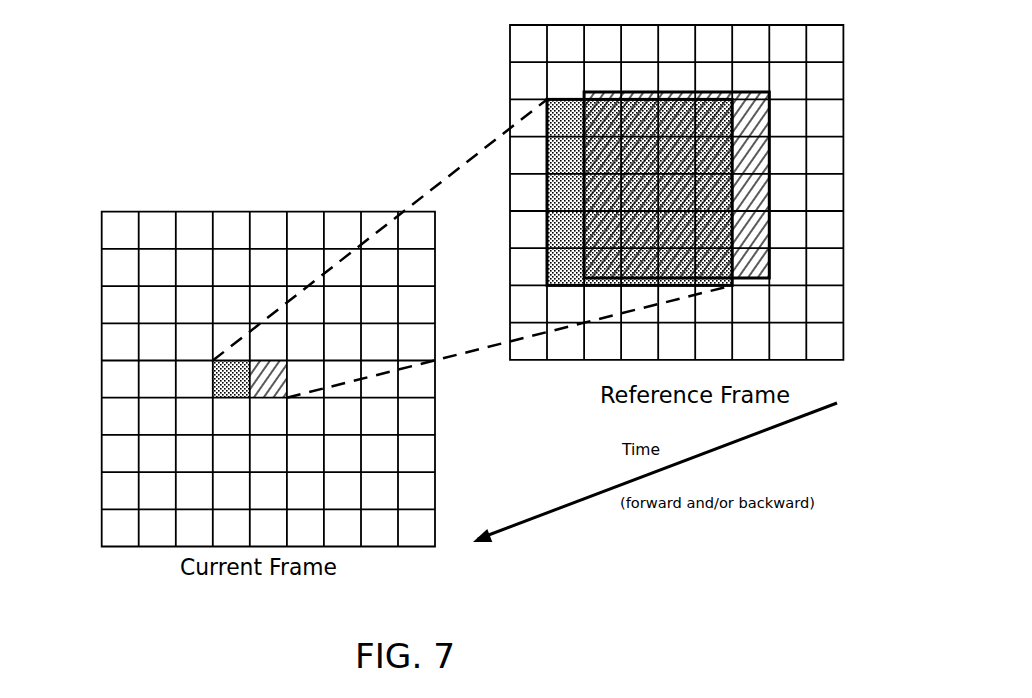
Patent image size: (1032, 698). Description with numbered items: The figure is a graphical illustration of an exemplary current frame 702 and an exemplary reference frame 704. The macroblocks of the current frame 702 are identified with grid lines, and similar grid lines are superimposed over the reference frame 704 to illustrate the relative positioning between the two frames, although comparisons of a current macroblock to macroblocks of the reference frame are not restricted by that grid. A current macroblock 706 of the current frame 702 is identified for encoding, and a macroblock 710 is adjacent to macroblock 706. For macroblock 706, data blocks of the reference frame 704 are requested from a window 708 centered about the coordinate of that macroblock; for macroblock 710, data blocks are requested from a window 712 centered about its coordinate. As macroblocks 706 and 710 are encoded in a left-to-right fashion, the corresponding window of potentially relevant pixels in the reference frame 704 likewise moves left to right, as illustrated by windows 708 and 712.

The current frame 702 is at (193, 211).
The reference frame 704 is at (510, 83).
The macroblock 706 is at (220, 380).
The macroblock 710 is at (255, 372).
The window 708 is at (547, 155).
The window 712 is at (770, 131).